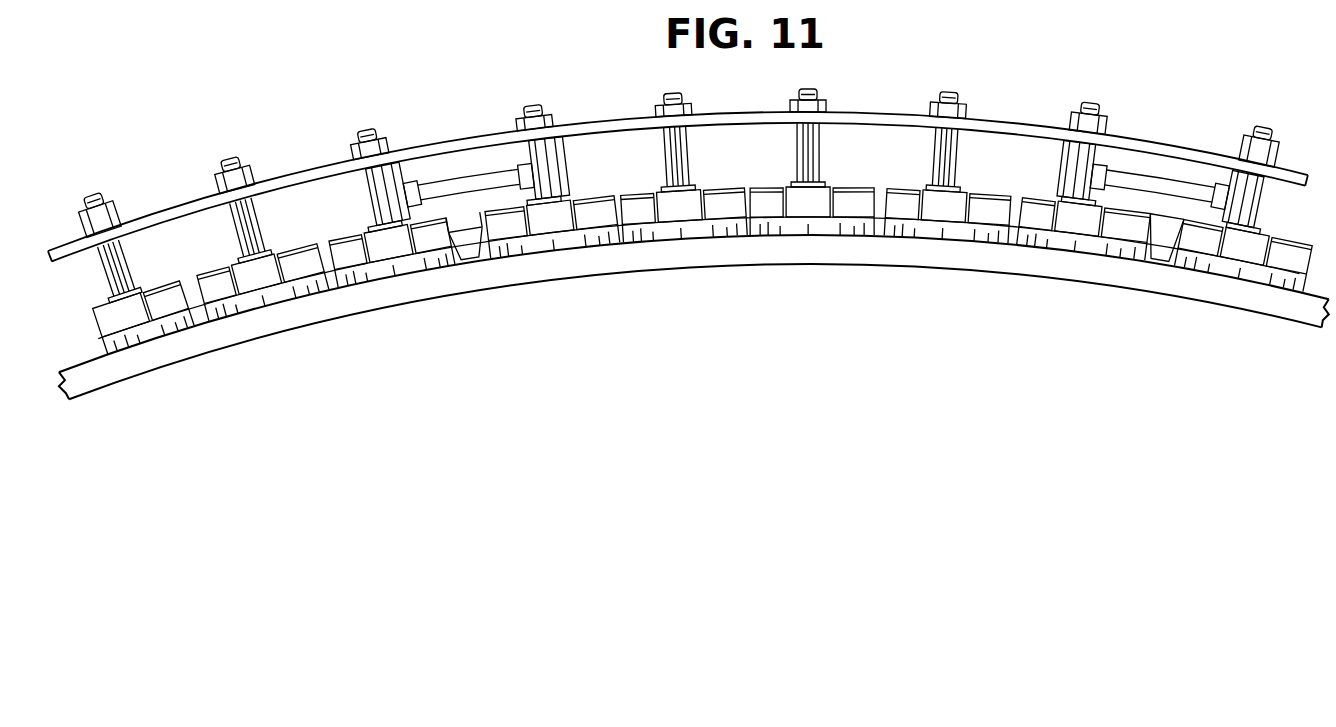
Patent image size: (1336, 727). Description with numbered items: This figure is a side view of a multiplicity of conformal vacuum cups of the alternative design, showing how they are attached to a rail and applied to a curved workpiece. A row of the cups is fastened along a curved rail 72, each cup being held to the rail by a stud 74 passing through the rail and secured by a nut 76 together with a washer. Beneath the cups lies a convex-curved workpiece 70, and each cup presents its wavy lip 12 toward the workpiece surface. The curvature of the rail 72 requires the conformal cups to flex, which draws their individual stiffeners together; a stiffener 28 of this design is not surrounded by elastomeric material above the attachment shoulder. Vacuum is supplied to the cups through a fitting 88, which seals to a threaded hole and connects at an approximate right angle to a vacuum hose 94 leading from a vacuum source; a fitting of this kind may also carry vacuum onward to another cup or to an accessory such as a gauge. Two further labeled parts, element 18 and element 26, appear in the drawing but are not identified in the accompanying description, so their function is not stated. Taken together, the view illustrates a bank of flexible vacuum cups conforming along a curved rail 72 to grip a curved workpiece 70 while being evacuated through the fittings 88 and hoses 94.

The lip 12 is at (477, 243).
The actuator housing 18 is at (523, 157).
The block 26 is at (636, 188).
The stiffener 28 is at (1044, 193).
The convex-curved workpiece 70 is at (200, 360).
The curved rail 72 is at (275, 176).
The stud 74 is at (1262, 130).
The nut 76 is at (1239, 142).
The fitting 88 is at (360, 212).
The vacuum hose 94 is at (1172, 178).